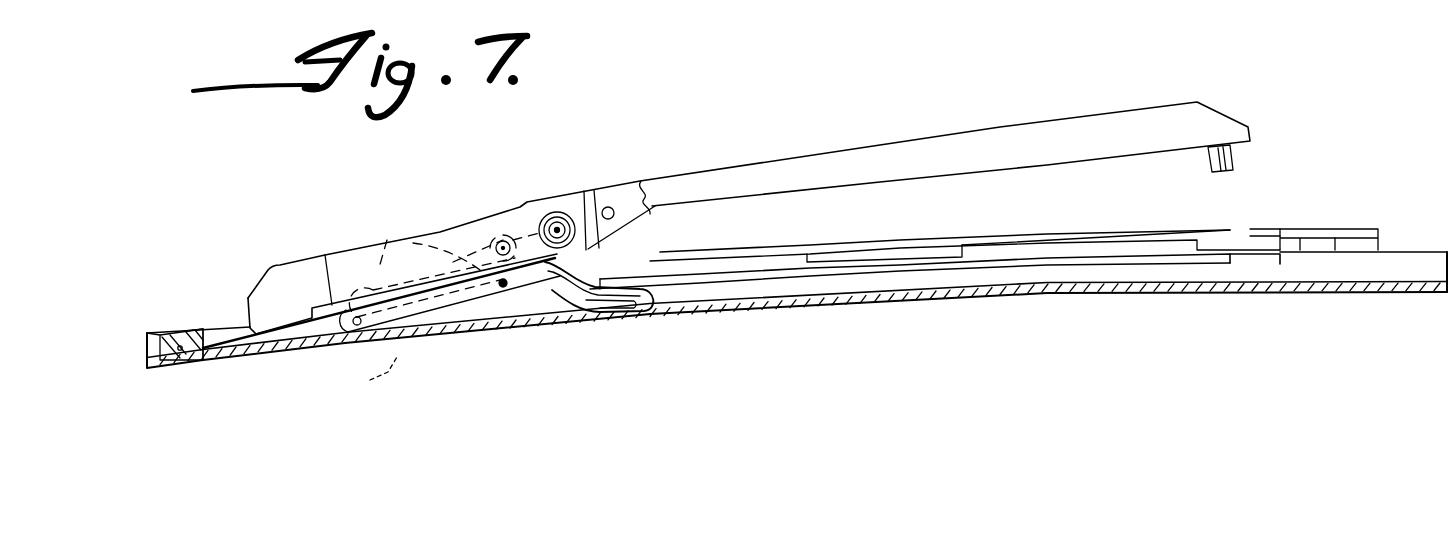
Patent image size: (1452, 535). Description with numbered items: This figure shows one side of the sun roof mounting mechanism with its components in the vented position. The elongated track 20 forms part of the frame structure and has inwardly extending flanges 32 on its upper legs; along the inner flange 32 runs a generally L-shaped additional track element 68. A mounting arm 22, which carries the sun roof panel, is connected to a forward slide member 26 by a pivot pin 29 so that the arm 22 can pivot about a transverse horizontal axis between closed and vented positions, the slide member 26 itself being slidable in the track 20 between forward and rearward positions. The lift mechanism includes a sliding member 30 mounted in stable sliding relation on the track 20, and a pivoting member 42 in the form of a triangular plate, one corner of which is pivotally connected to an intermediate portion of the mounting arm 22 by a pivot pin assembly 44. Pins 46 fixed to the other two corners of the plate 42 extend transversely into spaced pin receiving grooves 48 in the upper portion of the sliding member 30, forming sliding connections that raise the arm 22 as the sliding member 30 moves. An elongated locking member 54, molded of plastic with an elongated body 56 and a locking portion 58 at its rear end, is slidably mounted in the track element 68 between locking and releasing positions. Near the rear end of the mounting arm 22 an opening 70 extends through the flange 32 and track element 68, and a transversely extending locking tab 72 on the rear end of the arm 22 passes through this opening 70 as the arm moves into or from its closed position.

The track 20 is at (778, 323).
The mounting arm 22 is at (915, 130).
The forward slide member 26 is at (207, 360).
The pivot pin 29 is at (177, 362).
The sliding member 30 is at (545, 342).
The flange 32 is at (184, 330).
The pivoting member 42 is at (412, 340).
The pivot pin assembly 44 is at (558, 228).
The first and second pins 46 is at (415, 245).
The pin receiving grooves 48 is at (603, 296).
The locking member 54 is at (1033, 232).
The elongated body 56 is at (781, 218).
The locking portion 58 is at (1290, 244).
The track element 68 is at (830, 250).
The opening 70 is at (1286, 240).
The locking tab 72 is at (1252, 131).